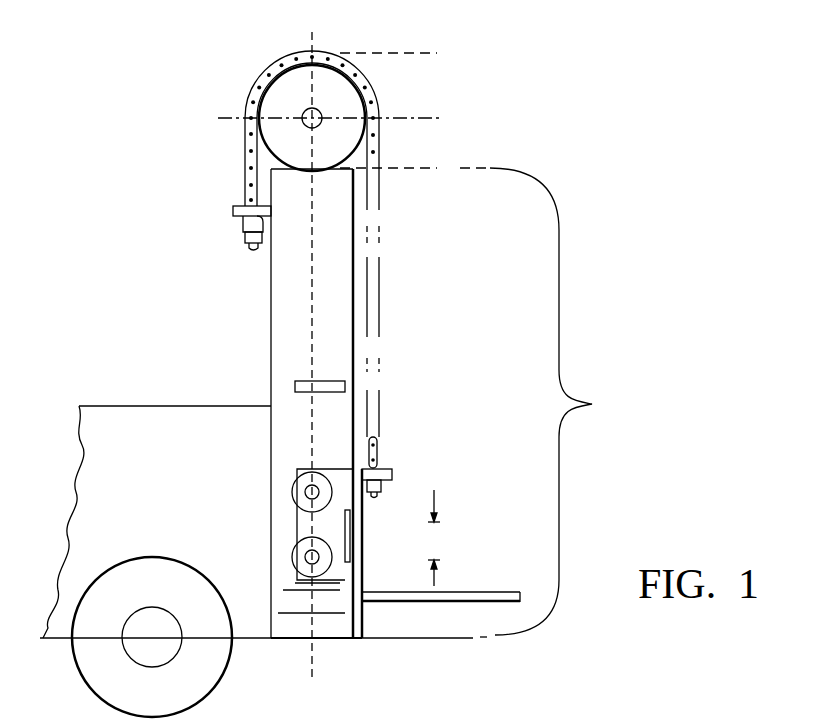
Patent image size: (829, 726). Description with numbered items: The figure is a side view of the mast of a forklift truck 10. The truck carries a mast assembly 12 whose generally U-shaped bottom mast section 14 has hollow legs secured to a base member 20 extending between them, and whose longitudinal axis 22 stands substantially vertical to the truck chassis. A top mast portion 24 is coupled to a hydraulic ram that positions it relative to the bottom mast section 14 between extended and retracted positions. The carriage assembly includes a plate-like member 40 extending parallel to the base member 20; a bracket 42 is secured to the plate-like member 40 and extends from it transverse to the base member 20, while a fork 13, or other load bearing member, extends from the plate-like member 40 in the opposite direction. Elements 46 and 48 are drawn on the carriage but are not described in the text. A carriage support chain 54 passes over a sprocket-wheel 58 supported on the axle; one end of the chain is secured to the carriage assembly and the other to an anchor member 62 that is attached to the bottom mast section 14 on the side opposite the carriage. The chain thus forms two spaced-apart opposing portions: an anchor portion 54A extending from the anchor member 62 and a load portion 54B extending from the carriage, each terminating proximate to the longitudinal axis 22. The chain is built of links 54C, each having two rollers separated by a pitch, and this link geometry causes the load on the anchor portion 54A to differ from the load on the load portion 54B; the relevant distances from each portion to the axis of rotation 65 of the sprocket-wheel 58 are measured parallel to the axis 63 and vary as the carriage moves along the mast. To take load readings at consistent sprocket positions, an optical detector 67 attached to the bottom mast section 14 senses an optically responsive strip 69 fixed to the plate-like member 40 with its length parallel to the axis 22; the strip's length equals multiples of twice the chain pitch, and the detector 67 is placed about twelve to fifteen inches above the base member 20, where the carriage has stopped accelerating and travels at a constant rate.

The forklift truck 10 is at (168, 146).
The mast assembly 12 is at (407, 304).
The fork 13 is at (452, 591).
The bottom mast section 14 is at (548, 402).
The base member 20 is at (349, 627).
The longitudinal axis 22 is at (313, 42).
The top mast portion 24 is at (440, 168).
The plate-like member 40 is at (357, 580).
The bracket 42 is at (318, 528).
The upper roller 46 is at (303, 492).
The lower roller 48 is at (303, 556).
The carriage support chain 54 is at (380, 213).
The anchor portion 54A is at (245, 155).
The load portion 54B is at (380, 292).
The link 54C is at (246, 122).
The sprocket-wheel 58 is at (352, 115).
The anchor member 62 is at (233, 212).
The axis 63 is at (409, 122).
The axis of rotation 65 is at (314, 117).
The optical detector 67 is at (296, 386).
The optically responsive strip 69 is at (348, 562).